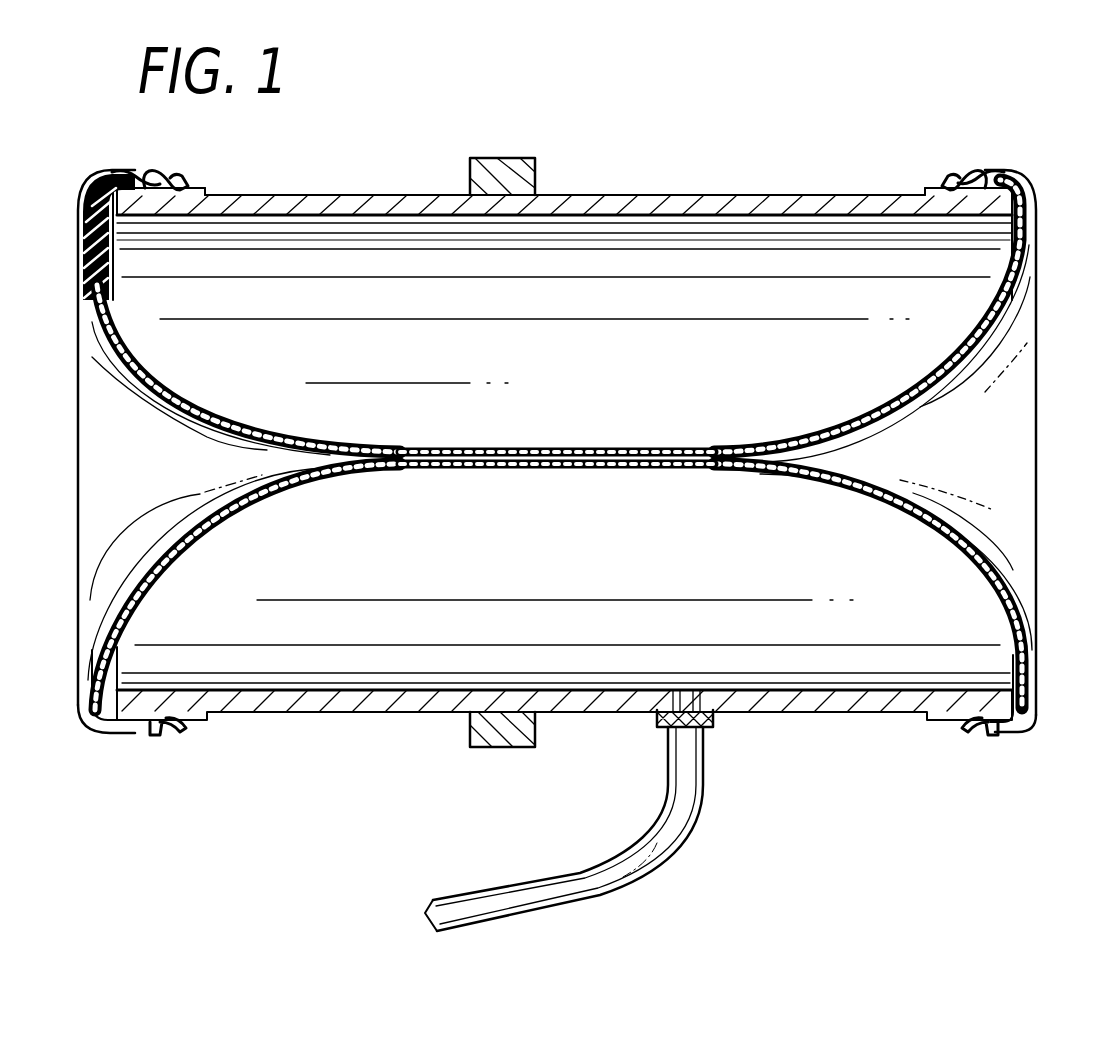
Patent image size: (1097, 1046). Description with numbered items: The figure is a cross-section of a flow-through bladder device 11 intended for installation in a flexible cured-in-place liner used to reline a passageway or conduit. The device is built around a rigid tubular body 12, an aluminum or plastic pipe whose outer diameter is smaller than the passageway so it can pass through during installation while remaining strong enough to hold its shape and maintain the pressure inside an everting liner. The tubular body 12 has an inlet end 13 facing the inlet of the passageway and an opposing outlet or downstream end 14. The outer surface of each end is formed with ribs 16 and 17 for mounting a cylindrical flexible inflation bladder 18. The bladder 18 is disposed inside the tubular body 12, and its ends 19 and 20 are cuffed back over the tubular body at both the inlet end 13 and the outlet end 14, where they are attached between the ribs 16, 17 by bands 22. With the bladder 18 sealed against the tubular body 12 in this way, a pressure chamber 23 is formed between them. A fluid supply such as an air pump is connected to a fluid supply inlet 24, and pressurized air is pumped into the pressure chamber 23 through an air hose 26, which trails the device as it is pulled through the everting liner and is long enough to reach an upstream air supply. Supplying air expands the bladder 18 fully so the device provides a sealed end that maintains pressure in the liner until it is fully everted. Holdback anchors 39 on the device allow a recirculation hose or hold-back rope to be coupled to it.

The flow-through bladder device 11 is at (677, 194).
The tubular body 12 is at (866, 200).
The inlet end 13 is at (900, 440).
The outlet end 14 is at (330, 462).
The rib 16 is at (205, 195).
The rib 17 is at (128, 176).
The flexible inflation bladder 18 is at (1008, 610).
The bladder end 19 is at (984, 170).
The bladder end 20 is at (160, 172).
The band 22 is at (167, 735).
The pressure chamber 23 is at (410, 233).
The fluid supply inlet 24 is at (717, 720).
The air hose 26 is at (633, 847).
The holdback anchor 39 is at (515, 165).